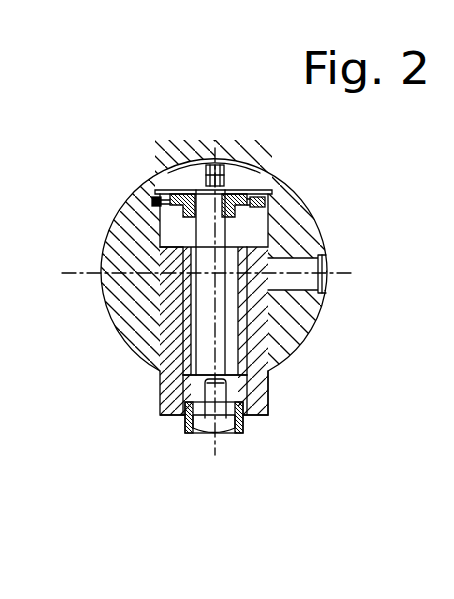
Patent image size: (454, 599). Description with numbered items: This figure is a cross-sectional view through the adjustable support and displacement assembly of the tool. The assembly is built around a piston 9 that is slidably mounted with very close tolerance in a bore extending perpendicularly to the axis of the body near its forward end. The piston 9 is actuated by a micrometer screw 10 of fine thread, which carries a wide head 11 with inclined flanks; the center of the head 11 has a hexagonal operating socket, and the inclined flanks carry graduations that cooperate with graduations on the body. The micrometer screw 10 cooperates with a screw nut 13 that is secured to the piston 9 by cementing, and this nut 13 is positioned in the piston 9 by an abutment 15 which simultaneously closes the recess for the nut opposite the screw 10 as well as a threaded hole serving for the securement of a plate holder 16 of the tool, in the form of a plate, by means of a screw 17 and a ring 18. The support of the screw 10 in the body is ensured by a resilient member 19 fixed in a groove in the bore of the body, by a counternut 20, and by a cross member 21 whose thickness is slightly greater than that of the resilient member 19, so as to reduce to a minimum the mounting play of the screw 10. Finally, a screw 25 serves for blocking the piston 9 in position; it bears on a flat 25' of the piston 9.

The piston 9 is at (176, 395).
The micrometer screw 10 is at (207, 234).
The wide head 11 is at (234, 183).
The screw nut 13 is at (233, 327).
The abutment 15 is at (190, 358).
The plate holder 16 is at (190, 413).
The screw 17 is at (218, 398).
The ring 18 is at (245, 424).
The resilient member 19 is at (158, 200).
The counternut 20 is at (268, 214).
The cross member 21 is at (176, 196).
The screw 25 is at (323, 267).
The flat 25' is at (311, 286).